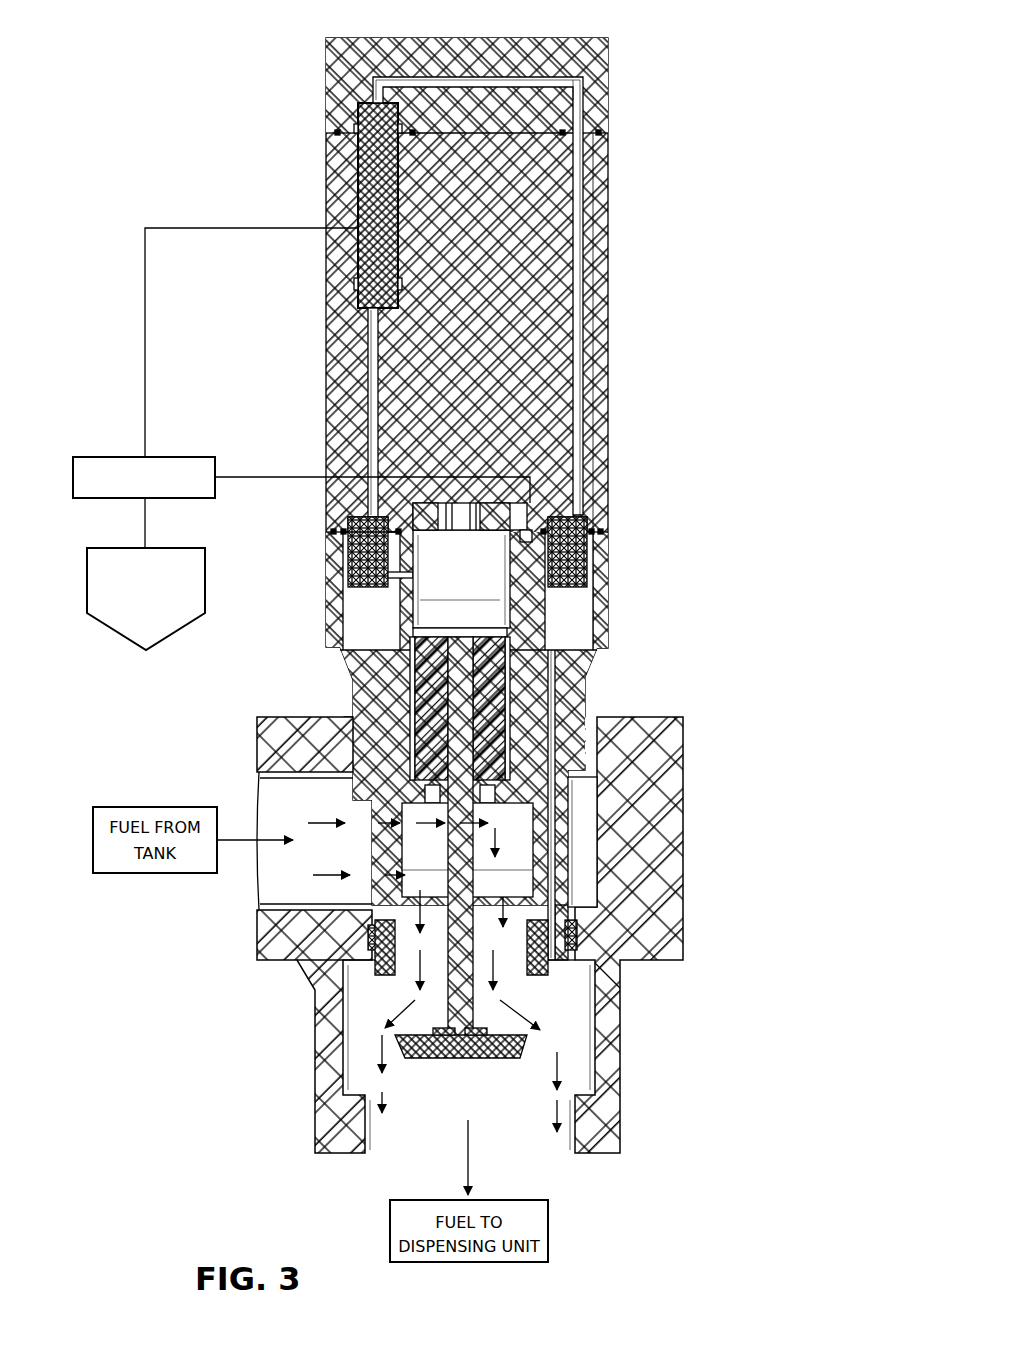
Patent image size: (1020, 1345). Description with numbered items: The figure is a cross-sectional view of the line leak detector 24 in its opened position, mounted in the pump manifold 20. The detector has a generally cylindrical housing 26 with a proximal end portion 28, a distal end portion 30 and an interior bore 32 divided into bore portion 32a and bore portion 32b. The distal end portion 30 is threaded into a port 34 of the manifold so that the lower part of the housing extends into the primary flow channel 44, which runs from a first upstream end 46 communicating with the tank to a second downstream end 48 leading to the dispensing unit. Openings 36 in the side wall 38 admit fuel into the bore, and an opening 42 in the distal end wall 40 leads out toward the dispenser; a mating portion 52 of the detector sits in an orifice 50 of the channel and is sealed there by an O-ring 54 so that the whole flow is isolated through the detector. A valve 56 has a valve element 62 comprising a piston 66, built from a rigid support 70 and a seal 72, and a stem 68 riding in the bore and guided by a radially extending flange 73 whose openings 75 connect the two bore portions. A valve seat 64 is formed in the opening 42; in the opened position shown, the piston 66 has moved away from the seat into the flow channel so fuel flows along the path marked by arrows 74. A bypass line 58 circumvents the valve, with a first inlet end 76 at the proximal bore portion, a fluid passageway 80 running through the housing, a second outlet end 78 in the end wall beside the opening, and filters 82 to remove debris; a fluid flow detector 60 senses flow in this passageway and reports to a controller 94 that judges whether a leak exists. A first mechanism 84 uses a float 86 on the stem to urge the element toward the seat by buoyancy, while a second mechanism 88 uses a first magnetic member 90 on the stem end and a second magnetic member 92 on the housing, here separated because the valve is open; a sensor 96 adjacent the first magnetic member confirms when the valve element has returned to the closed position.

The pump manifold 20 is at (683, 770).
The leak detector 24 is at (708, 78).
The housing 26 is at (326, 308).
The proximal end portion 28 is at (326, 92).
The distal end portion 30 is at (352, 700).
The interior bore 32 is at (560, 678).
The bore portion 32a is at (430, 875).
The bore portion 32b is at (447, 603).
The port 34 is at (262, 730).
The openings 36 is at (565, 858).
The side wall 38 is at (285, 797).
The distal end wall 40 is at (387, 970).
The opening 42 is at (560, 960).
The primary flow channel 44 is at (262, 775).
The first upstream end 46 is at (295, 930).
The second downstream end 48 is at (598, 1155).
The orifice 50 is at (325, 962).
The mating portion 52 is at (370, 937).
The O-ring 54 is at (578, 928).
The valve 56 is at (505, 912).
The bypass line 58 is at (583, 253).
The fluid flow detector 60 is at (352, 158).
The valve element 62 is at (582, 770).
The valve seat 64 is at (535, 977).
The piston 66 is at (445, 1063).
The stem 68 is at (345, 668).
The rigid support 70 is at (490, 1055).
The seal 72 is at (410, 1052).
The flange 73 is at (592, 785).
The arrows 74 is at (371, 1048).
The openings 75 is at (440, 778).
The first inlet end 76 is at (395, 578).
The second outlet end 78 is at (556, 965).
The fluid passageway 80 is at (525, 80).
The filter 82 is at (348, 530).
The first mechanism 84 is at (405, 663).
The float 86 is at (520, 652).
The second mechanism 88 is at (485, 497).
The first magnetic member 90 is at (493, 627).
The second magnetic member 92 is at (345, 500).
The controller 94 is at (185, 457).
The sensor 96 is at (527, 510).